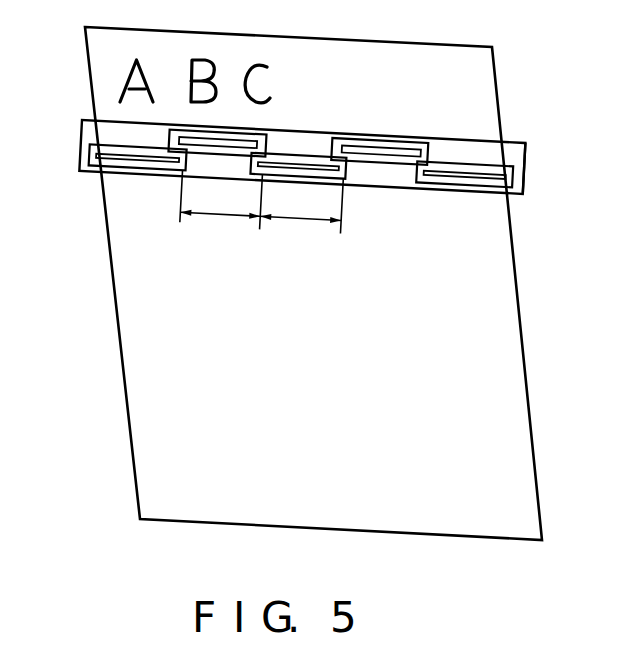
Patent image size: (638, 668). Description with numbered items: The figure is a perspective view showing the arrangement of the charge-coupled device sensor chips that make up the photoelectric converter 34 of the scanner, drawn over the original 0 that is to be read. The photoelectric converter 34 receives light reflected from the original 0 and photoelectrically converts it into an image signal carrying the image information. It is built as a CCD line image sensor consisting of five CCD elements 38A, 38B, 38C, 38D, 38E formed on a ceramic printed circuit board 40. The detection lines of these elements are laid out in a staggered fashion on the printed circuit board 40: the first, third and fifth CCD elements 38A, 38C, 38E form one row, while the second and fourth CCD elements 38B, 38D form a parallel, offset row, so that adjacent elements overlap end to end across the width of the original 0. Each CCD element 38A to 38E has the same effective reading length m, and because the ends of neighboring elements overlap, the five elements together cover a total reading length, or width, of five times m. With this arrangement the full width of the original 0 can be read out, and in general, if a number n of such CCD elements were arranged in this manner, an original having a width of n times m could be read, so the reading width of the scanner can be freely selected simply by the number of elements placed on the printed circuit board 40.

The original 0 is at (132, 443).
The photoelectric converter 34 is at (281, 140).
The CCD element 38A is at (136, 181).
The CCD element 38B is at (248, 127).
The CCD element 38C is at (315, 138).
The CCD element 38D is at (383, 133).
The CCD element 38E is at (463, 198).
The ceramic printed circuit board 40 is at (548, 169).
The effective reading length m is at (262, 201).